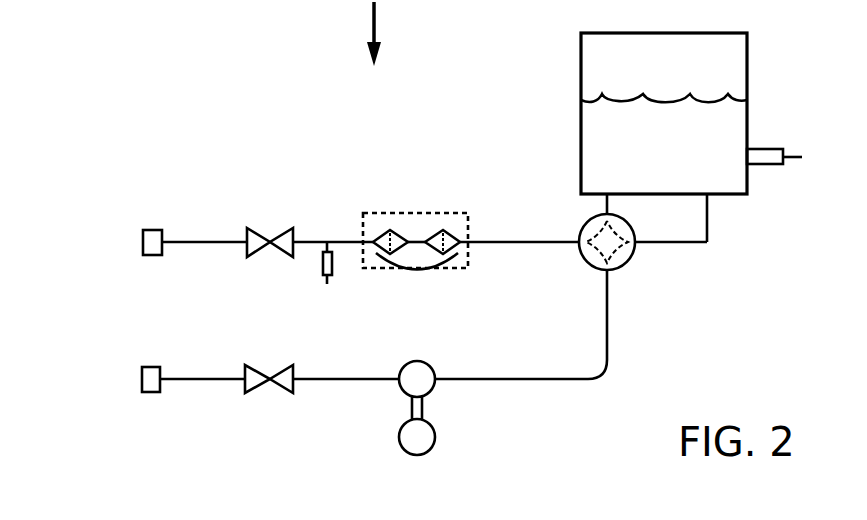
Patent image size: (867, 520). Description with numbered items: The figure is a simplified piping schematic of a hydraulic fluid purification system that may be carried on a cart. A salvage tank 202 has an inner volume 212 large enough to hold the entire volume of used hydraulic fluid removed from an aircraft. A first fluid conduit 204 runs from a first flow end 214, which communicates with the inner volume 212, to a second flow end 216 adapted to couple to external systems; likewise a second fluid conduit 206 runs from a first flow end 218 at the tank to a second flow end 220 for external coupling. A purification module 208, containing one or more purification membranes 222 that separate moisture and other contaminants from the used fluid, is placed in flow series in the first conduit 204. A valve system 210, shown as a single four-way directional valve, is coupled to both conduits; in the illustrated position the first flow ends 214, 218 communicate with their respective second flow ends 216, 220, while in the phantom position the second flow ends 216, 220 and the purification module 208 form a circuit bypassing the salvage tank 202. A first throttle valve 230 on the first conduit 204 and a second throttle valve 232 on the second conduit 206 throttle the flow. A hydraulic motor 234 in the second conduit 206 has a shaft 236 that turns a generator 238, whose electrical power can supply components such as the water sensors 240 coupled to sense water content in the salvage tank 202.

The salvage tank 202 is at (581, 63).
The first fluid conduit 204 is at (305, 240).
The second fluid conduit 206 is at (365, 382).
The purification module 208 is at (393, 212).
The valve system 210 is at (634, 265).
The inner volume 212 is at (683, 80).
The first flow end 214 is at (598, 205).
The second flow end 216 is at (143, 241).
The first flow end 218 is at (708, 200).
The second flow end 220 is at (142, 380).
The purification membranes 222 is at (416, 271).
The first throttle valve 230 is at (287, 233).
The second throttle valve 232 is at (280, 386).
The hydraulic motor 234 is at (432, 366).
The shaft 236 is at (428, 400).
The generator 238 is at (437, 442).
The water sensors 240 is at (322, 262).